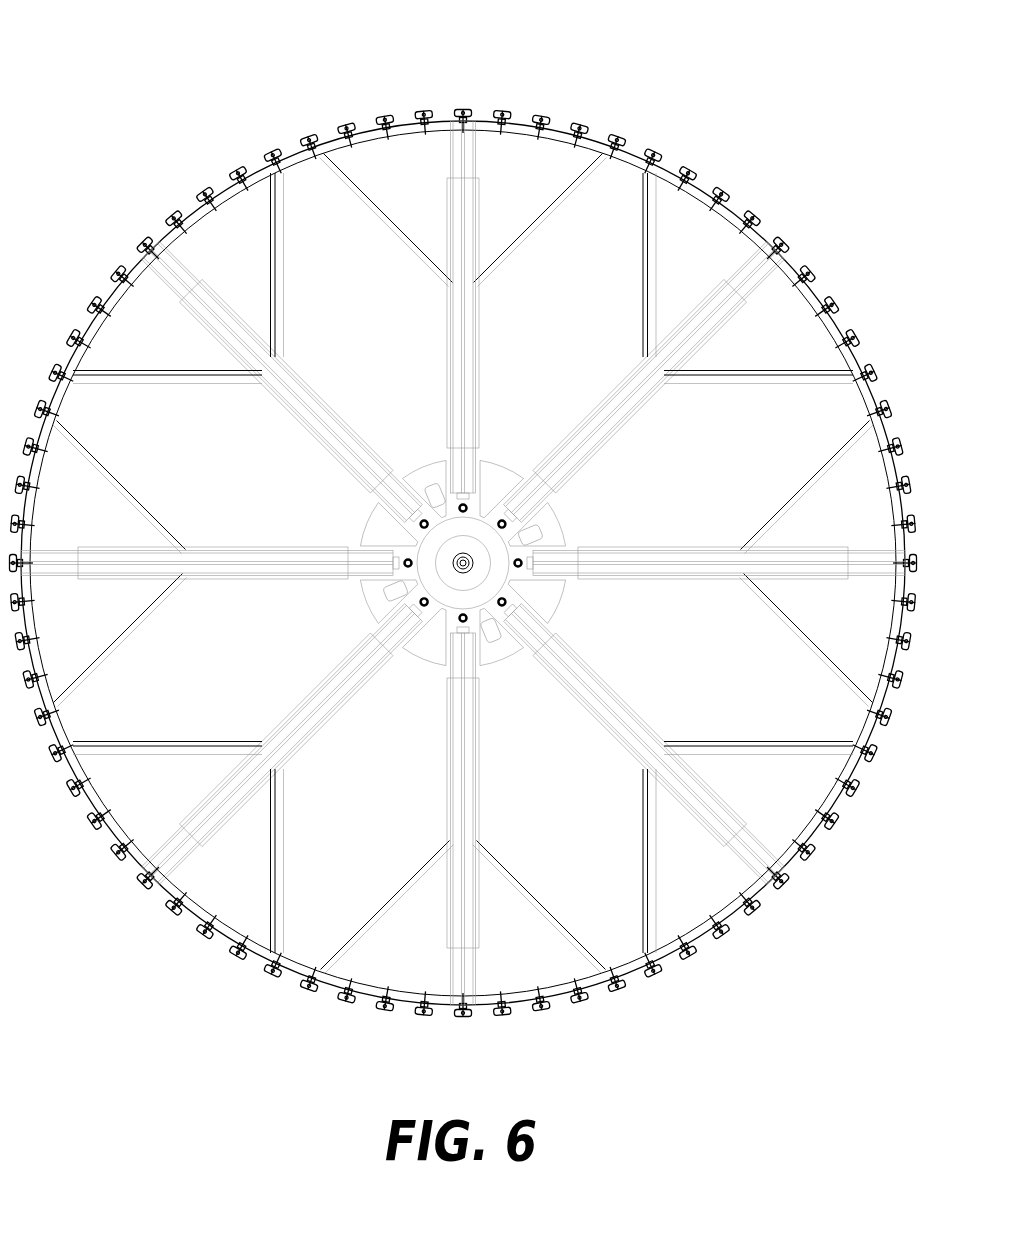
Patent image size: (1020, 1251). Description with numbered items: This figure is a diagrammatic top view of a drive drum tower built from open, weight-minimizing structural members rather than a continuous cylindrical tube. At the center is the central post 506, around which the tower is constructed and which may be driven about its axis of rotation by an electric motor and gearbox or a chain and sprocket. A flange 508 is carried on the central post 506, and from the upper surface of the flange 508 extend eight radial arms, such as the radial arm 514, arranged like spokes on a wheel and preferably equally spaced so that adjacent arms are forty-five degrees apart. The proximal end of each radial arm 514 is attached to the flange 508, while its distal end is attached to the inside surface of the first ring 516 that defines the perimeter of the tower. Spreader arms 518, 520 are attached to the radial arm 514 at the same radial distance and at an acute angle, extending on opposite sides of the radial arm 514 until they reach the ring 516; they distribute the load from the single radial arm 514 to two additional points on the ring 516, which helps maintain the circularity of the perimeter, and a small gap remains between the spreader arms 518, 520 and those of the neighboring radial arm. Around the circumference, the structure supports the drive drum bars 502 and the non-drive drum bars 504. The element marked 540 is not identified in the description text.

The drive drum bar 502 is at (455, 110).
The non-drive drum bar 504 is at (505, 110).
The central post 506 is at (488, 534).
The flange 508 is at (483, 459).
The radial arm 514 is at (306, 392).
The first ring 516 is at (713, 147).
The spreader arm 518 is at (127, 370).
The spreader arm 520 is at (270, 223).
The wing nut 540 is at (463, 109).